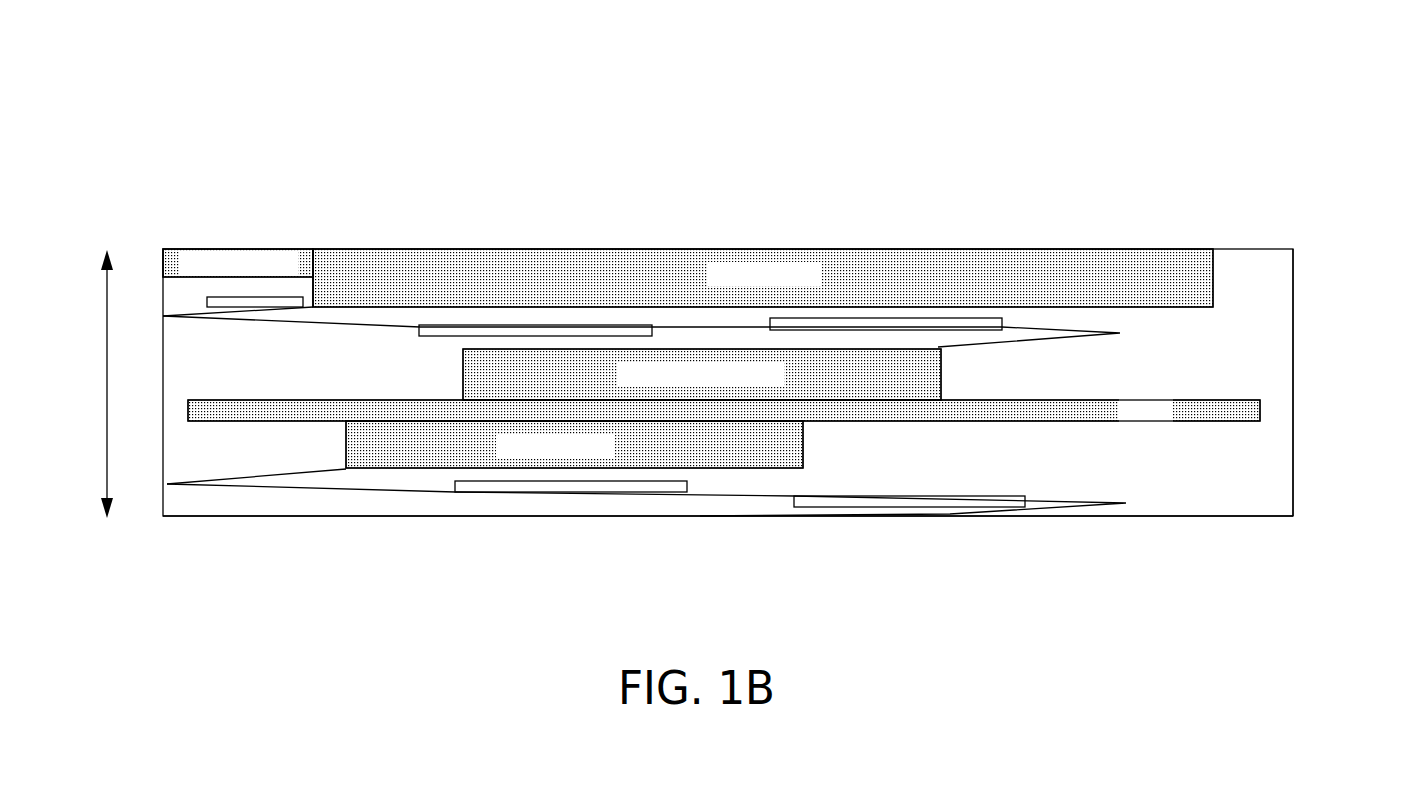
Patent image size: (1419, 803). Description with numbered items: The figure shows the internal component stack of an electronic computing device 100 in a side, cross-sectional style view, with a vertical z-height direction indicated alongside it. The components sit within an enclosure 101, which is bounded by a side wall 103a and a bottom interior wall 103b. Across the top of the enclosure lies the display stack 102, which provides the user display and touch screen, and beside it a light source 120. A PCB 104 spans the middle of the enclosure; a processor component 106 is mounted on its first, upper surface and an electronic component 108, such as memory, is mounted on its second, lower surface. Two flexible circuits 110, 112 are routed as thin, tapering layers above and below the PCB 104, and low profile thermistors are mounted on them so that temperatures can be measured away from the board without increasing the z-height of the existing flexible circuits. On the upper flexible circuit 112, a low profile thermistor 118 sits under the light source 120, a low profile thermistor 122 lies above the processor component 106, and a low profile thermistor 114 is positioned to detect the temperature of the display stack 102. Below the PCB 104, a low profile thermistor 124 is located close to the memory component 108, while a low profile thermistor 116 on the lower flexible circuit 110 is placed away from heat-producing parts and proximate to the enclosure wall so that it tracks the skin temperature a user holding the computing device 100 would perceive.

The electronic computing device 100 is at (738, 306).
The enclosure 101 is at (1300, 335).
The display stack 102 is at (1148, 253).
The side wall 103a is at (1295, 475).
The bottom interior wall 103b is at (1248, 517).
The PCB 104 is at (1192, 396).
The processor component 106 is at (463, 368).
The electronic component 108 is at (808, 435).
The flexible circuit 110 is at (1127, 503).
The flexible circuit 112 is at (1122, 333).
The low profile thermistor 114 is at (1004, 320).
The low profile thermistor 116 is at (806, 508).
The low profile thermistor 118 is at (200, 300).
The light source 120 is at (172, 247).
The low profile thermistor 122 is at (418, 330).
The low profile thermistor 124 is at (687, 481).